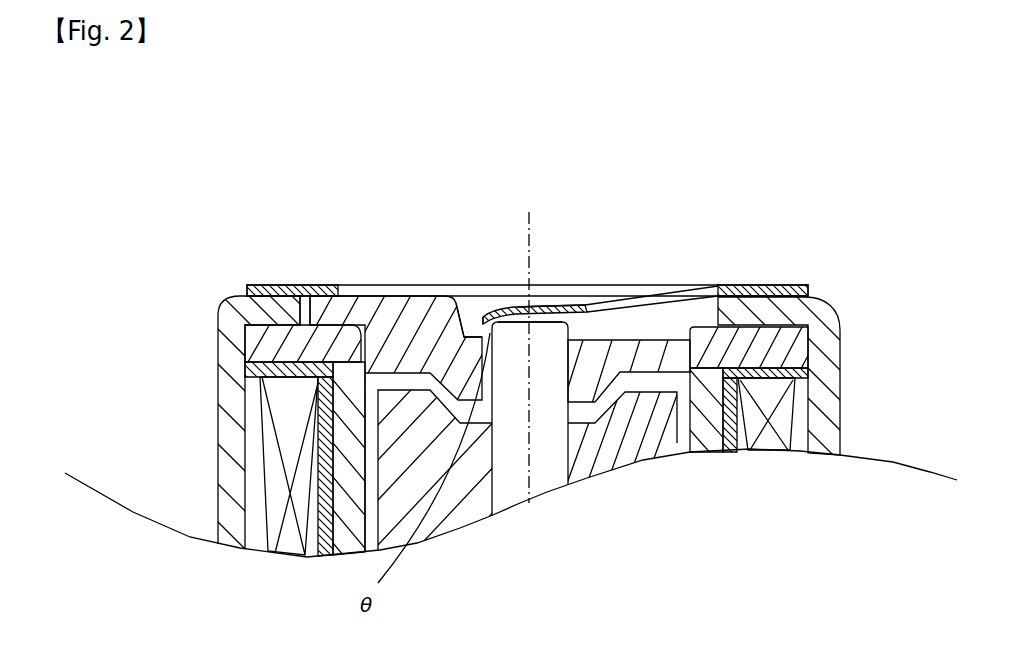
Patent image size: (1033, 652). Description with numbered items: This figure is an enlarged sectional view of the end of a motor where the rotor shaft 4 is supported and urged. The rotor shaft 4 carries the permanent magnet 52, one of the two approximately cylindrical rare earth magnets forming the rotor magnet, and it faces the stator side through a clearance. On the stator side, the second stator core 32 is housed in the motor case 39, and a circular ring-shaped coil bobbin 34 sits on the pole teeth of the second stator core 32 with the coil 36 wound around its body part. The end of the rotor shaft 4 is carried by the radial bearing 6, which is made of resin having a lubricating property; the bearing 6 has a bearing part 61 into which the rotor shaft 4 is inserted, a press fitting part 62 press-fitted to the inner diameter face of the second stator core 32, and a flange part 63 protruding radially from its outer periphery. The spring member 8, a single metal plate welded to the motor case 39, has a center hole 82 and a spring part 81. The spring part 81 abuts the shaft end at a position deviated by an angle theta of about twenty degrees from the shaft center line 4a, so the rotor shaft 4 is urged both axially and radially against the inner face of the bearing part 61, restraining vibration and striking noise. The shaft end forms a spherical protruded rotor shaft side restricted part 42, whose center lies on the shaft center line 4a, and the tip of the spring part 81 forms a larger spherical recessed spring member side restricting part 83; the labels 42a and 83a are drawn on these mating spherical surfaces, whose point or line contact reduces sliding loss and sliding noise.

The rotor shaft 4 is at (542, 486).
The shaft center line 4a is at (530, 320).
The bearing 6 is at (399, 310).
The spring member 8 is at (751, 283).
The second stator core 32 is at (800, 350).
The coil bobbin 34 is at (810, 377).
The coil 36 is at (768, 423).
The motor case 39 is at (833, 324).
The rotor shaft side restricted part 42 is at (558, 312).
The contact surface 42a is at (543, 312).
The permanent magnet 52 is at (620, 460).
The bearing part 61 is at (432, 320).
The press fitting part 62 is at (681, 345).
The flange part 63 is at (312, 300).
The spring part 81 is at (665, 293).
The center hole 82 is at (322, 304).
The spring member side restricting part 83 is at (520, 337).
The arm tip 83a is at (485, 316).